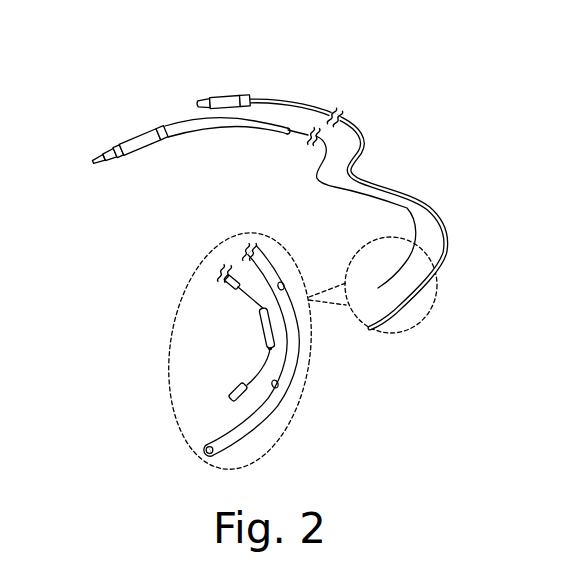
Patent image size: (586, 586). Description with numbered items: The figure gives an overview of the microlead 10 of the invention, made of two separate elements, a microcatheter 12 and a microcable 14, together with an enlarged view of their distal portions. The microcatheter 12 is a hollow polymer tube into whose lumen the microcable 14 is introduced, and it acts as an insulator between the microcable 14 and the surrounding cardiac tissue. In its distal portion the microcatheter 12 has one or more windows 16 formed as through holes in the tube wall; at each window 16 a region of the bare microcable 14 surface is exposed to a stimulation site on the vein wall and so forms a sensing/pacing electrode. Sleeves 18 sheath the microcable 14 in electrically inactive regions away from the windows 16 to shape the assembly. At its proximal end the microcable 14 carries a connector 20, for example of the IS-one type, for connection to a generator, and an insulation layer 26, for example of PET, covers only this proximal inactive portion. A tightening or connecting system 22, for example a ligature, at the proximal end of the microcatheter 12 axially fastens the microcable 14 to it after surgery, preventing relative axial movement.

The microlead 10 is at (283, 106).
The microcatheter 12 is at (420, 198).
The microcable 14 is at (362, 196).
The window 16 is at (282, 283).
The sleeve 18 is at (262, 322).
The connector 20 is at (138, 130).
The tightening or connecting system 22 is at (233, 99).
The insulation 26 is at (217, 125).